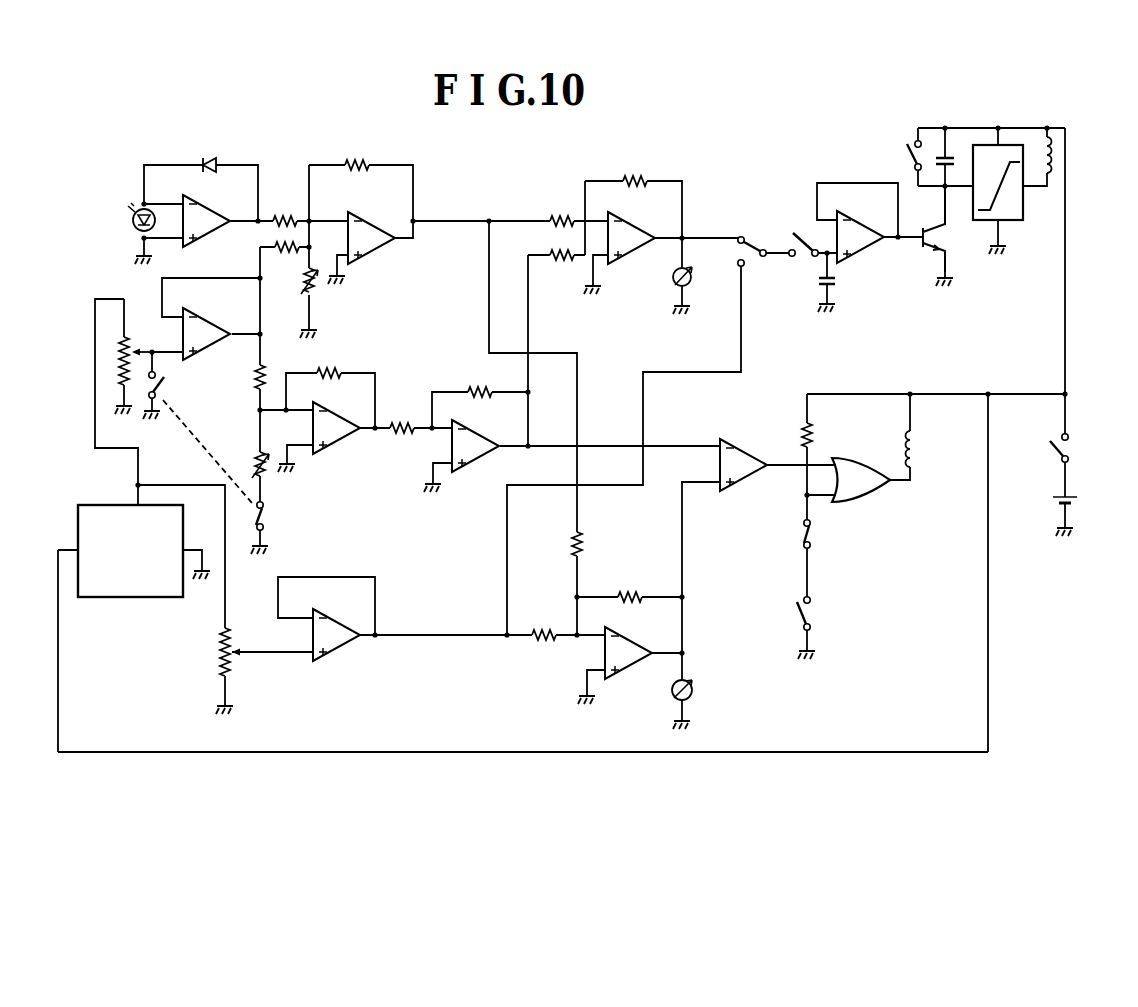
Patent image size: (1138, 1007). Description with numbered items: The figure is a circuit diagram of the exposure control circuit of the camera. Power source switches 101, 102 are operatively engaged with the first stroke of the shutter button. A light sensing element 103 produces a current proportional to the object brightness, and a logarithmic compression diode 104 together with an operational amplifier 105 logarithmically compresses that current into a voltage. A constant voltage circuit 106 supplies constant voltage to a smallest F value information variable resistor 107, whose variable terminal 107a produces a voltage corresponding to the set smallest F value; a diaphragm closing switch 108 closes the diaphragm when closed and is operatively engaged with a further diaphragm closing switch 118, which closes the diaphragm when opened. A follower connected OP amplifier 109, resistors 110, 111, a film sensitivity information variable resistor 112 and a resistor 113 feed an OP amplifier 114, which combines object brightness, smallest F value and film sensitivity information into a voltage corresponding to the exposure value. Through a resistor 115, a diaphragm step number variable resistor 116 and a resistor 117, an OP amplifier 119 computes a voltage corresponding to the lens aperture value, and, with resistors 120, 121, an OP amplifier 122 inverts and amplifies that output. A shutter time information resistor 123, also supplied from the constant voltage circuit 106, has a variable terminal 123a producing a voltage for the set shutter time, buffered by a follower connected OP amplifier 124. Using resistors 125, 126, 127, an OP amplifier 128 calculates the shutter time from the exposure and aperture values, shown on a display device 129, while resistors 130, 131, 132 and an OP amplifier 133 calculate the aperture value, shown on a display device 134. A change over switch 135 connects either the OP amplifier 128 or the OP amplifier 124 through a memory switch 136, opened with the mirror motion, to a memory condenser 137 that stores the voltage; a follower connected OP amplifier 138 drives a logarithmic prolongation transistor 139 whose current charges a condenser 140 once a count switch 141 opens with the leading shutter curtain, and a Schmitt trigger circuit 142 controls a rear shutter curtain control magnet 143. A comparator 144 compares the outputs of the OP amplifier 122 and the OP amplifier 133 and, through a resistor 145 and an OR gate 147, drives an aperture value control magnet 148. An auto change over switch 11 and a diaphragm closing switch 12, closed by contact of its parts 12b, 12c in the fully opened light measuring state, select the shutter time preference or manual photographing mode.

The auto change over switch 11 is at (800, 615).
The diaphragm closing switch 12 is at (803, 535).
The part of diaphragm closing switch 12b is at (814, 522).
The part of diaphragm closing switch 12c is at (814, 548).
The power source switch 101 is at (1076, 498).
The power source switch 102 is at (1075, 453).
The light sensing element 103 is at (135, 228).
The logarithmic compression diode 104 is at (208, 157).
The operational amplifier 105 is at (213, 212).
The constant voltage circuit 106 is at (113, 504).
The smallest F value information variable resistor 107 is at (116, 348).
The variable terminal 107a is at (158, 336).
The diaphragm closing switch 108 is at (168, 398).
The follower connected OP amplifier 109 is at (207, 321).
The resistor 110 is at (284, 213).
The resistor 111 is at (286, 254).
The film sensitivity information variable resistor 112 is at (305, 292).
The resistor 113 is at (356, 158).
The OP amplifier 114 is at (377, 221).
The resistor 115 is at (254, 380).
The diaphragm step number variable resistor 116 is at (254, 466).
The resistor 117 is at (325, 368).
The diaphragm closing switch 118 is at (265, 528).
The OP amplifier 119 is at (340, 462).
The resistor 120 is at (403, 421).
The resistor 121 is at (476, 386).
The OP amplifier 122 is at (475, 467).
The shutter time information resistor 123 is at (216, 662).
The variable terminal 123a is at (258, 650).
The follower connected OP amplifier 124 is at (343, 621).
The resistor 125 is at (551, 217).
The resistor 126 is at (556, 262).
The resistor 127 is at (635, 175).
The OP amplifier 128 is at (633, 224).
The display device 129 is at (689, 288).
The resistor 130 is at (543, 647).
The resistor 131 is at (588, 549).
The resistor 132 is at (630, 591).
The OP amplifier 133 is at (633, 645).
The display device 134 is at (695, 700).
The change over switch 135 is at (752, 264).
The memory switch 136 is at (807, 237).
The memory condenser 137 is at (842, 281).
The follower connected OP amplifier 138 is at (858, 224).
The logarithmic prolongation transistor 139 is at (920, 254).
The condenser 140 is at (950, 150).
The count switch 141 is at (910, 155).
The Schmitt trigger circuit 142 is at (1013, 226).
The rear shutter curtain control magnet 143 is at (1050, 196).
The comparator 144 is at (752, 455).
The resistor 145 is at (812, 440).
The OR gate 147 is at (878, 460).
The aperture value control magnet 148 is at (915, 470).